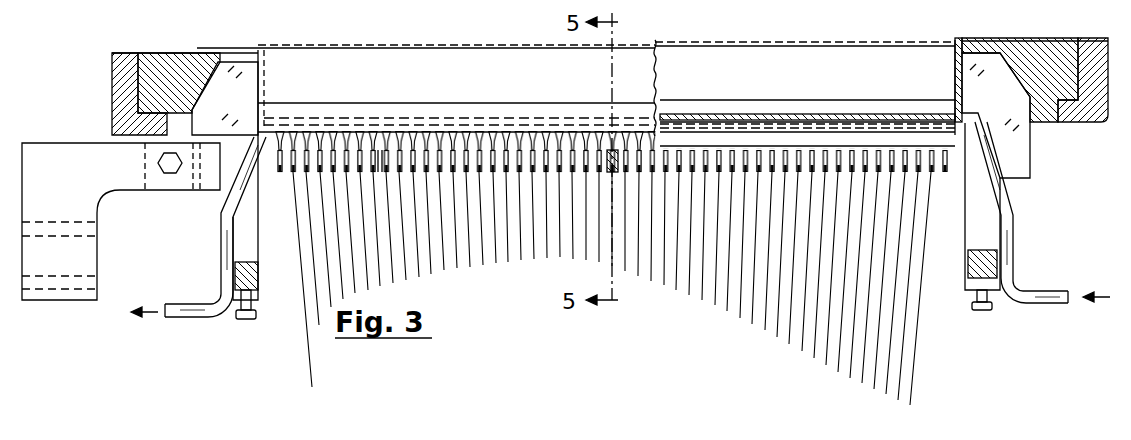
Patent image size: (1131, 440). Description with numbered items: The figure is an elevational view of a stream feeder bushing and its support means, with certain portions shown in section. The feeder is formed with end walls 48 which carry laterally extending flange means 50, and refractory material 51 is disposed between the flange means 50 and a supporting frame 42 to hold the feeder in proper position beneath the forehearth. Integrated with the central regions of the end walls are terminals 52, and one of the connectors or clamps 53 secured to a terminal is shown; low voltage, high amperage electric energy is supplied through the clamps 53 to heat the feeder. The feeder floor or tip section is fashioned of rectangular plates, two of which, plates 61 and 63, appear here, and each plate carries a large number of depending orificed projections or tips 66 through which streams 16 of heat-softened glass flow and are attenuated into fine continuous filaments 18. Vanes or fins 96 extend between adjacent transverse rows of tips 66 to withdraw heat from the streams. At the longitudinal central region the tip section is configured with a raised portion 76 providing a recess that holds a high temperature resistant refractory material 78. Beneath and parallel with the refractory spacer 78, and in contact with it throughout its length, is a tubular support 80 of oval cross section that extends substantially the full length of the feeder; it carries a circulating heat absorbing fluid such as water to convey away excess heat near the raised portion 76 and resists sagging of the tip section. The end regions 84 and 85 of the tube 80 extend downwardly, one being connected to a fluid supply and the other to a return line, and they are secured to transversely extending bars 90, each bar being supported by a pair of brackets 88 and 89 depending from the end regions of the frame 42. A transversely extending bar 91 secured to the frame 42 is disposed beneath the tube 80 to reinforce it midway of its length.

The streams 16 is at (612, 132).
The fine continuous filaments 18 is at (435, 254).
The supporting frame 42 is at (112, 104).
The end walls 48 is at (265, 62).
The flange means 50 is at (1000, 38).
The refractory material 51 is at (1065, 52).
The terminals 52 is at (241, 108).
The connectors or clamps 53 is at (120, 192).
The subsection or plate 61 is at (532, 115).
The subsection or plate 63 is at (780, 125).
The projections or tips 66 is at (493, 172).
The raised portion 76 is at (700, 114).
The refractory material 78 is at (725, 124).
The tubular support 80 is at (795, 148).
The end region 84 is at (1010, 248).
The end region 85 is at (222, 233).
The brackets 88 is at (980, 221).
The brackets 89 is at (243, 240).
The transversely extending bar 90 is at (260, 284).
The transversely extending bar 91 is at (605, 172).
The vanes or fins 96 is at (382, 165).